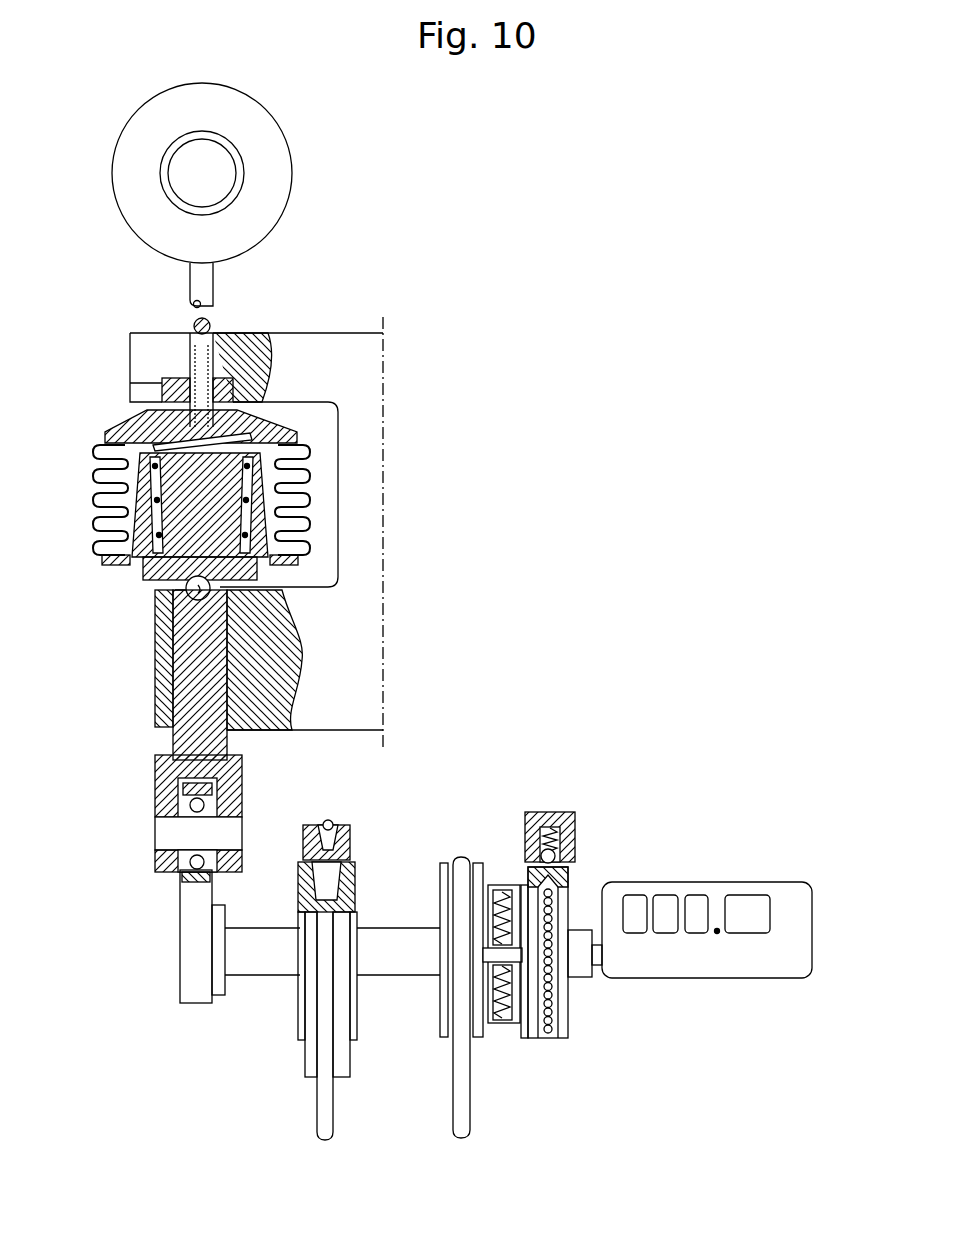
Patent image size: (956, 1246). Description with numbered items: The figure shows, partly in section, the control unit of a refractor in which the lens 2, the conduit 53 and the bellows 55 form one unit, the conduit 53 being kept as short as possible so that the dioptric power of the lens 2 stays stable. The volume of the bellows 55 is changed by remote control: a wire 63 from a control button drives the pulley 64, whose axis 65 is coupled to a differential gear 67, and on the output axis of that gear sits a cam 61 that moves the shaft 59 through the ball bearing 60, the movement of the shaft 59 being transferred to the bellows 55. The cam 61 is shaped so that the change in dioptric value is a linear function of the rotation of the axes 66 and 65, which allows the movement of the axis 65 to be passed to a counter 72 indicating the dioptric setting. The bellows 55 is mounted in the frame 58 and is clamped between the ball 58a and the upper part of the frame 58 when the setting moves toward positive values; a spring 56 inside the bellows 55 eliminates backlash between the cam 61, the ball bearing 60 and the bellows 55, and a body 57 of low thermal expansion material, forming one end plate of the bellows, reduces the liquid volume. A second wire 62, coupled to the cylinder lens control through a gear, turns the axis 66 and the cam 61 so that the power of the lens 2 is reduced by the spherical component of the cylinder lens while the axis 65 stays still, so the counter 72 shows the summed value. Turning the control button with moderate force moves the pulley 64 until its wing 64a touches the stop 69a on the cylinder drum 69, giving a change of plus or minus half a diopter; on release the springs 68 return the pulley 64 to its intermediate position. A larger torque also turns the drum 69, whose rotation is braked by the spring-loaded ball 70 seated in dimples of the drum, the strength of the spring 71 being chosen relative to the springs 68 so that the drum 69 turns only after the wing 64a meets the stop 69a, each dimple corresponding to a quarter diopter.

The lens 2 is at (122, 173).
The conduit 53 is at (197, 330).
The bellows 55 is at (102, 445).
The spring 56 is at (142, 487).
The body 57 is at (140, 527).
The ball 58a is at (155, 588).
The frame 58 is at (160, 648).
The shaft 59 is at (180, 692).
The ball bearing 60 is at (180, 790).
The cam 61 is at (193, 908).
The wire 62 is at (323, 822).
The wire 63 is at (460, 1112).
The pulley 64 is at (440, 1035).
The wing 64a is at (537, 955).
The axis 65 is at (392, 960).
The axis 66 is at (260, 960).
The differential gear 67 is at (353, 873).
The springs 68 is at (500, 892).
The cylinder drum 69 is at (560, 1010).
The stop 69a is at (522, 882).
The spring-loaded ball 70 is at (573, 845).
The spring 71 is at (562, 812).
The counter 72 is at (685, 965).